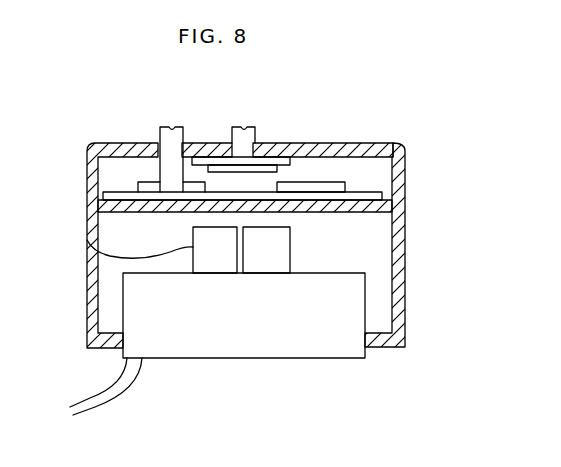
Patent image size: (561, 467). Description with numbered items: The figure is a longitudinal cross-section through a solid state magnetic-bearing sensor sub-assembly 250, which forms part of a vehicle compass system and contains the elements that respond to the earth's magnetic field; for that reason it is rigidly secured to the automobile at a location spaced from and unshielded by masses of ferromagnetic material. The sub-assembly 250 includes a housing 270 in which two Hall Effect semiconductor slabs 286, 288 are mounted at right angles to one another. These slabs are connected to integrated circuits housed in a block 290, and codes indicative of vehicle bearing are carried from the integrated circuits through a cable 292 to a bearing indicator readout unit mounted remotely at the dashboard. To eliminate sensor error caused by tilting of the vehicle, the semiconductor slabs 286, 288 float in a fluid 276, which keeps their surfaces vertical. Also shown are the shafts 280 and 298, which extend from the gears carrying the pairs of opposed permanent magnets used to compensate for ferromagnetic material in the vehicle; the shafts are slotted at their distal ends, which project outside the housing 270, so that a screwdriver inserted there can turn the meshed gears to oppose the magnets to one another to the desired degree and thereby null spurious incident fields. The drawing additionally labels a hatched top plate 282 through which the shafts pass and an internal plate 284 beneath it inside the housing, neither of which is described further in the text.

The magnetic-bearing sensor sub-assembly 250 is at (440, 165).
The housing 270 is at (415, 336).
The fluid 276 is at (375, 263).
The shaft 280 is at (258, 128).
The top plate 282 is at (208, 143).
The plate 284 is at (363, 190).
The Hall Effect semiconductor slab 286 is at (248, 244).
The Hall Effect semiconductor slab 288 is at (87, 244).
The block 290 is at (353, 297).
The cable 292 is at (110, 405).
The shaft 298 is at (162, 125).